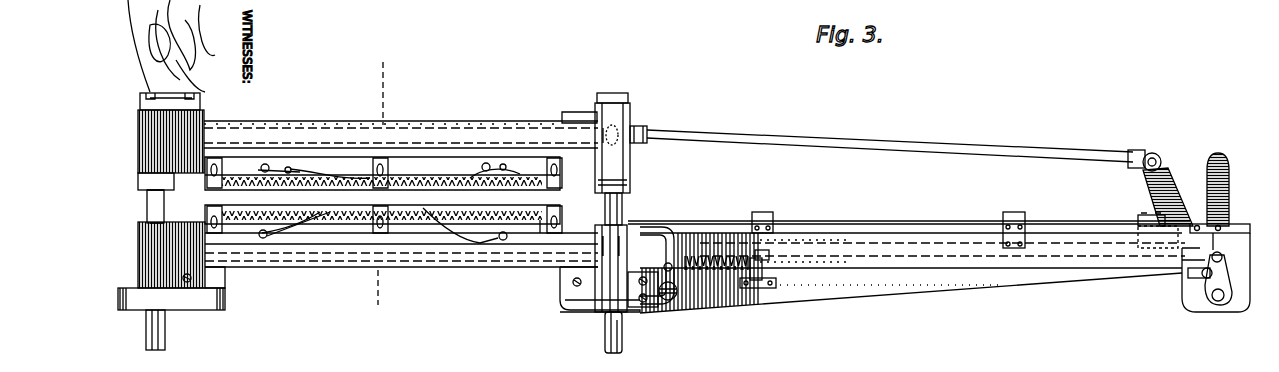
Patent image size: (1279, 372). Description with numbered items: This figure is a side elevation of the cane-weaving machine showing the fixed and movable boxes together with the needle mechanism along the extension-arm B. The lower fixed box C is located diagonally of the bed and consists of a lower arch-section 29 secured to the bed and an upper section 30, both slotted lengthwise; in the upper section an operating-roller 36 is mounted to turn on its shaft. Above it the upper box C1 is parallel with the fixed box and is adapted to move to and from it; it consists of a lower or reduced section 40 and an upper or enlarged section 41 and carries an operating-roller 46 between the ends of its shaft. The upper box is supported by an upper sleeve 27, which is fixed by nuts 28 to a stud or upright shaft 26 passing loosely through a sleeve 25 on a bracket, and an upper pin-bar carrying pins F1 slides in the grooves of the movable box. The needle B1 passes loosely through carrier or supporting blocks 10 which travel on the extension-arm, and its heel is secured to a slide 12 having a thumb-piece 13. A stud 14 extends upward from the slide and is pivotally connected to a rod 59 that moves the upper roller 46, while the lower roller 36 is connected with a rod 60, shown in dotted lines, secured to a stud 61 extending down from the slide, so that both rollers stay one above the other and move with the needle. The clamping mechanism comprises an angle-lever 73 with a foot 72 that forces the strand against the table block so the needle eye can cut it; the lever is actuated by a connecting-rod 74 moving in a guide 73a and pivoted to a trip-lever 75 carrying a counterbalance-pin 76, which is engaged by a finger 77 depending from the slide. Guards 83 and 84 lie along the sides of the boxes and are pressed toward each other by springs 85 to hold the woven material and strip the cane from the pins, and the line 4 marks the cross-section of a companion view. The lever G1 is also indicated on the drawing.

The section line 4 is at (381, 182).
The carrier or supporting blocks 10 is at (764, 216).
The slide 12 is at (1148, 228).
The thumb-piece 13 is at (1230, 186).
The stud 14 is at (1176, 190).
The sleeve 25 is at (600, 238).
The stud or upright shaft 26 is at (624, 208).
The upper sleeve 27 is at (602, 136).
The nuts 28 is at (167, 222).
The lower arch-section 29 is at (278, 268).
The upper section 30 is at (383, 224).
The operating-roller 36 is at (612, 255).
The lower or reduced section 40 is at (383, 171).
The upper or enlarged section 41 is at (342, 130).
The operating-roller 46 is at (642, 130).
The rod 59 is at (980, 150).
The rod 60 is at (972, 262).
The stud 61 is at (1173, 270).
The foot 72 is at (652, 232).
The angle-lever 73 is at (690, 243).
The guide 73a is at (762, 290).
The connecting-rod 74 is at (722, 265).
The trip-lever 75 is at (1233, 281).
The counterbalance-pin 76 is at (1222, 246).
The finger 77 is at (1232, 230).
The guard 83 is at (428, 178).
The guard 84 is at (418, 212).
The springs 85 is at (305, 250).
The extension-arm B is at (912, 250).
The needle B1 is at (915, 226).
The fixed box C is at (457, 280).
The upper box C1 is at (382, 109).
The pins F1 is at (540, 228).
The lever G1 is at (245, 176).